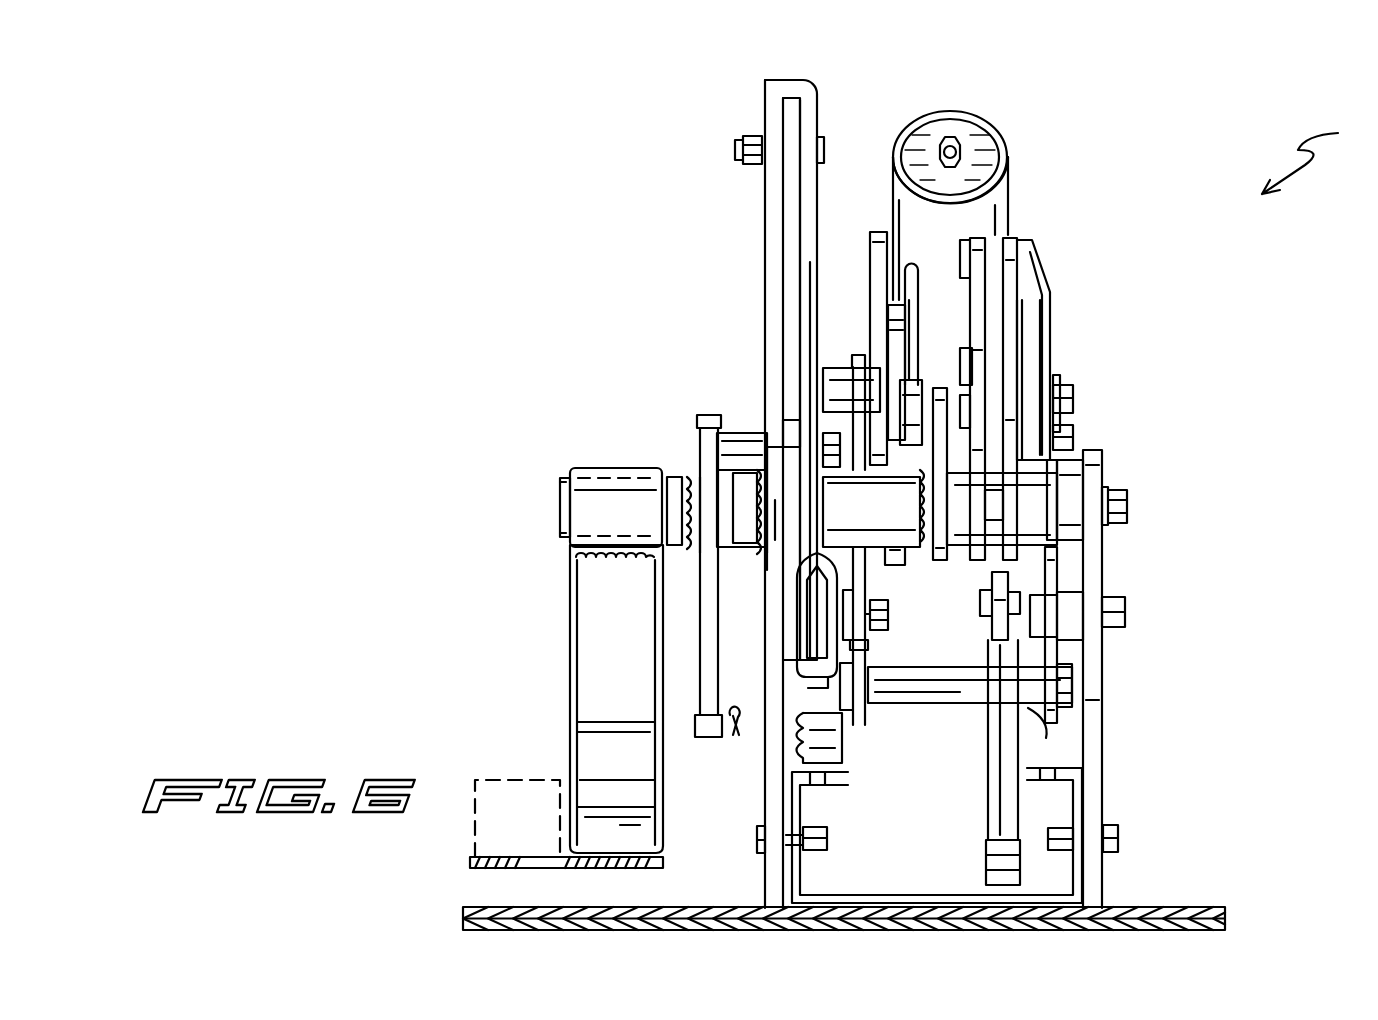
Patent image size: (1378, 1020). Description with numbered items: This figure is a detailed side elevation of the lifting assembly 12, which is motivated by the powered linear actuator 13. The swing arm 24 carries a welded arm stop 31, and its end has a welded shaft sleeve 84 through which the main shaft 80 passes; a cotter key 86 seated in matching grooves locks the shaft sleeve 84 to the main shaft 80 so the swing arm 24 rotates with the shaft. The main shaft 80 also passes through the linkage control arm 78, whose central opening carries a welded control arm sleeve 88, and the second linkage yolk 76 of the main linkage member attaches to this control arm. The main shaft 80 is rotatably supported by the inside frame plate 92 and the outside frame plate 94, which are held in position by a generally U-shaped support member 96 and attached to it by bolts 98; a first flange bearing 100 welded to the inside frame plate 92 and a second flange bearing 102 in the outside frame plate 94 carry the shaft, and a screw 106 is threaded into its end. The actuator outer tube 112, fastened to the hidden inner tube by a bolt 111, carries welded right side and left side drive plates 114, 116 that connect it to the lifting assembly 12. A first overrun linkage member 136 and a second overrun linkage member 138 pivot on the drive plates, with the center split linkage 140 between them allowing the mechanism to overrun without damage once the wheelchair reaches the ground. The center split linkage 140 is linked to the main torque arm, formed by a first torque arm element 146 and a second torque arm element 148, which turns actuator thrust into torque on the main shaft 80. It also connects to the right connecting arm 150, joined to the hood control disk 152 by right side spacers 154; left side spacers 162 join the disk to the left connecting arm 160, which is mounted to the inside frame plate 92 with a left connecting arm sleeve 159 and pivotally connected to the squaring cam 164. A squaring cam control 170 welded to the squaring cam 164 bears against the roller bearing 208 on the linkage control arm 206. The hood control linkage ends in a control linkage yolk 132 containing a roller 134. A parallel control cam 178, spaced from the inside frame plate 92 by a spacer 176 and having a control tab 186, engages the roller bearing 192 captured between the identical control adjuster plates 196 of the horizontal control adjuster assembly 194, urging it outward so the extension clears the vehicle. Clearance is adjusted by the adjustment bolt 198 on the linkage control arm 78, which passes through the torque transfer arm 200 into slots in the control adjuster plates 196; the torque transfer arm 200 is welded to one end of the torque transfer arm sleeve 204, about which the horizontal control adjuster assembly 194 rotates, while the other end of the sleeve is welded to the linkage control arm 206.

The lifting assembly 12 is at (1319, 158).
The powered linear actuator 13 is at (1036, 187).
The swing arm 24 is at (602, 680).
The arm stop 31 is at (495, 868).
The second linkage yolk 76 is at (733, 732).
The linkage control arm 78 is at (700, 695).
The main shaft 80 is at (562, 505).
The shaft sleeve 84 is at (623, 495).
The cotter key 86 is at (563, 478).
The control arm sleeve 88 is at (672, 480).
The inside frame plate 92 is at (775, 880).
The outside frame plate 94 is at (1105, 880).
The support member 96 is at (832, 905).
The bolts 98 is at (760, 837).
The first flange bearing 100 is at (748, 552).
The second flange bearing 102 is at (1072, 472).
The screw 106 is at (1130, 507).
The bolt 111 is at (985, 160).
The outer tube 112 is at (962, 110).
The right side drive plate 114 is at (1050, 272).
The left side drive plate 116 is at (916, 265).
The control linkage yolk 132 is at (1012, 600).
The roller 134 is at (1010, 575).
The first overrun linkage member 136 is at (1012, 320).
The second overrun linkage member 138 is at (983, 265).
The center split linkage 140 is at (995, 302).
The first torque arm element 146 is at (1010, 338).
The second torque arm element 148 is at (1040, 372).
The right connecting arm 150 is at (1060, 688).
The hood control disk 152 is at (1005, 825).
The hood control disk right side spacers 154 is at (1042, 718).
The left connecting arm sleeve 159 is at (863, 690).
The left connecting arm 160 is at (875, 605).
The hood control disk left side spacers 162 is at (962, 708).
The squaring cam 164 is at (878, 255).
The squaring cam control 170 is at (905, 330).
The spacer 176 is at (790, 118).
The parallel control cam 178 is at (806, 192).
The control tab 186 is at (778, 80).
The roller bearing 192 is at (815, 620).
The horizontal control adjuster assembly 194 is at (786, 299).
The control adjuster plates 196 is at (805, 345).
The adjustment bolt 198 is at (740, 440).
The torque transfer arm 200 is at (790, 425).
The torque transfer arm sleeve 204 is at (895, 512).
The linkage control arm 206 is at (937, 545).
The roller bearing 208 is at (912, 412).